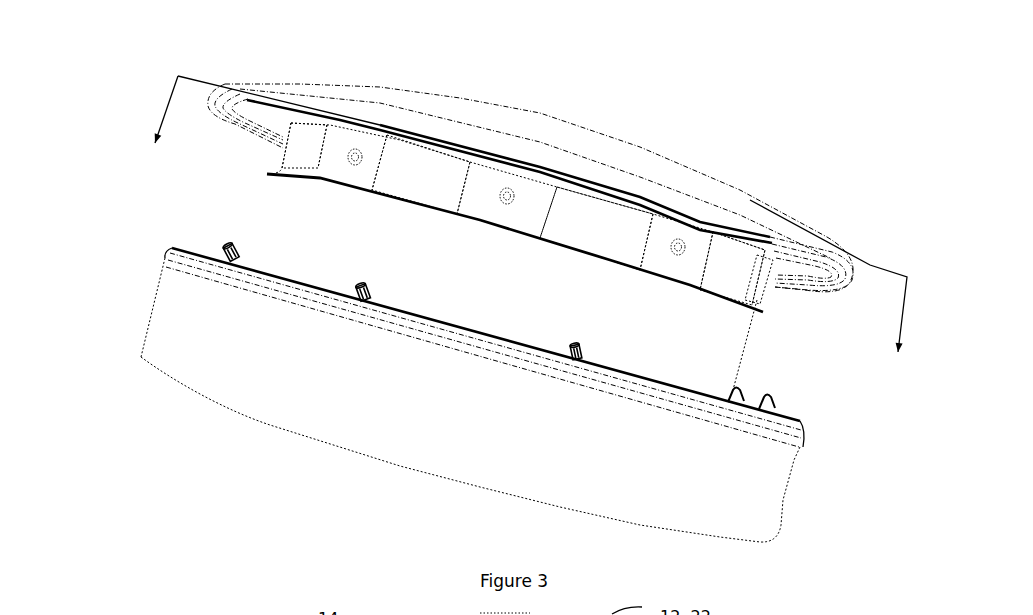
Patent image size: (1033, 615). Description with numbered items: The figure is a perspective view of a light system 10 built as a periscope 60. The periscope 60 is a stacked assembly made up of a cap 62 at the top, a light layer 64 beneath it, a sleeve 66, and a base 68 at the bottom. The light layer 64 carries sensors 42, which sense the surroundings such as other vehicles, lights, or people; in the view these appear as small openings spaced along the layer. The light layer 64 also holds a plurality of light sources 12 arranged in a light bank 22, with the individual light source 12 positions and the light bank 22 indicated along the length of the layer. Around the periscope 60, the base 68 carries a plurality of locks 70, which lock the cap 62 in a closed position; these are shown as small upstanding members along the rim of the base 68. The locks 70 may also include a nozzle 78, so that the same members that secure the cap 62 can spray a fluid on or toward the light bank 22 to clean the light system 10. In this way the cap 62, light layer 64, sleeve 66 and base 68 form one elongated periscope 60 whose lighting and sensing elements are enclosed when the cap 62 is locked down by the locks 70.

The light system 10 is at (757, 143).
The light source 12 is at (303, 152).
The light bank 22 is at (523, 214).
The sensor 42 is at (358, 157).
The periscope 60 is at (645, 138).
The cap 62 is at (512, 118).
The light layer 64 is at (790, 309).
The sleeve 66 is at (210, 224).
The base 68 is at (794, 507).
The locks 70 is at (357, 294).
The nozzle 78 is at (498, 325).